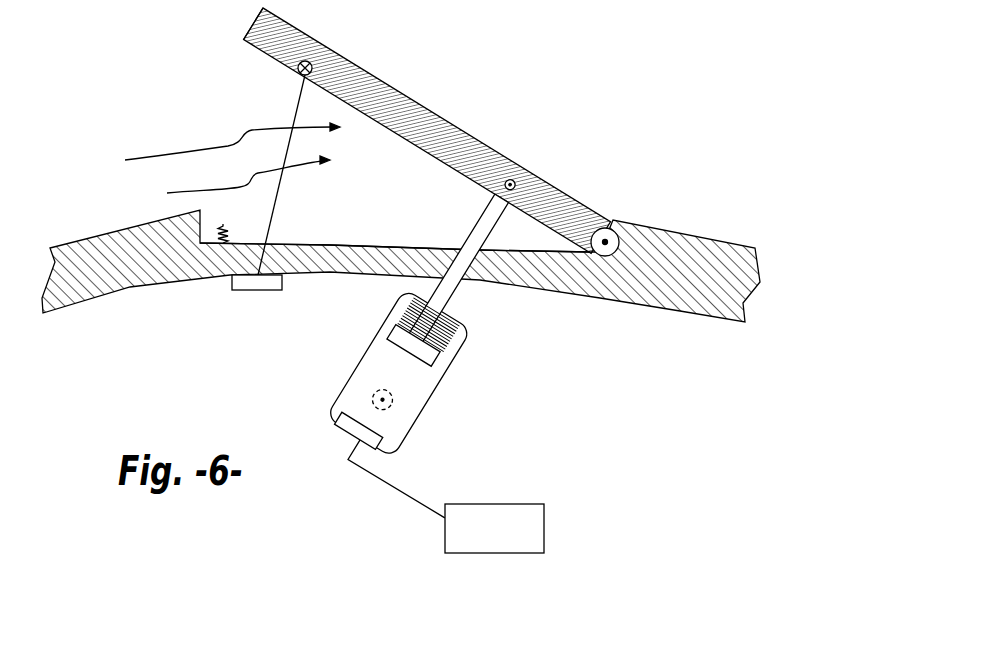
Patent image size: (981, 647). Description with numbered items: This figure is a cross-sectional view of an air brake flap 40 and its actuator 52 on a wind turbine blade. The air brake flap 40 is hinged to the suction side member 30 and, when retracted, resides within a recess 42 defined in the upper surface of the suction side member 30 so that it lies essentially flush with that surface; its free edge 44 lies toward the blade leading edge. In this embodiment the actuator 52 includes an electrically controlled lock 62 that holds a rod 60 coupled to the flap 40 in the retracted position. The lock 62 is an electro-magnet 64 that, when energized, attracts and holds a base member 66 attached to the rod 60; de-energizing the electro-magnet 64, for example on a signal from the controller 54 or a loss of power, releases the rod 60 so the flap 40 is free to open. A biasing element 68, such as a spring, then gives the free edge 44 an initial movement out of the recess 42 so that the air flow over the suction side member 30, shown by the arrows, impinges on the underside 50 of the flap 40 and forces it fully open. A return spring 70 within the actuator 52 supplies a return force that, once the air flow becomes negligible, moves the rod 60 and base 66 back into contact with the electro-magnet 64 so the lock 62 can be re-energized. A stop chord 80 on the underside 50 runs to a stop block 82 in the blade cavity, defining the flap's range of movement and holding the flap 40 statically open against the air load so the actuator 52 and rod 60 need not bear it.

The suction side member 30 is at (93, 236).
The air brake flap 40 is at (437, 113).
The recess 42 is at (396, 244).
The free edge 44 is at (245, 40).
The underside 50 is at (359, 116).
The actuator 52 is at (435, 349).
The controller 54 is at (482, 554).
The rod 60 is at (478, 218).
The electrically controlled lock 62 is at (350, 401).
The electro-magnet 64 is at (340, 432).
The base member 66 is at (406, 352).
The biasing element 68 is at (231, 236).
The return spring 70 is at (464, 347).
The stop chord 80 is at (293, 116).
The stop block 82 is at (263, 291).